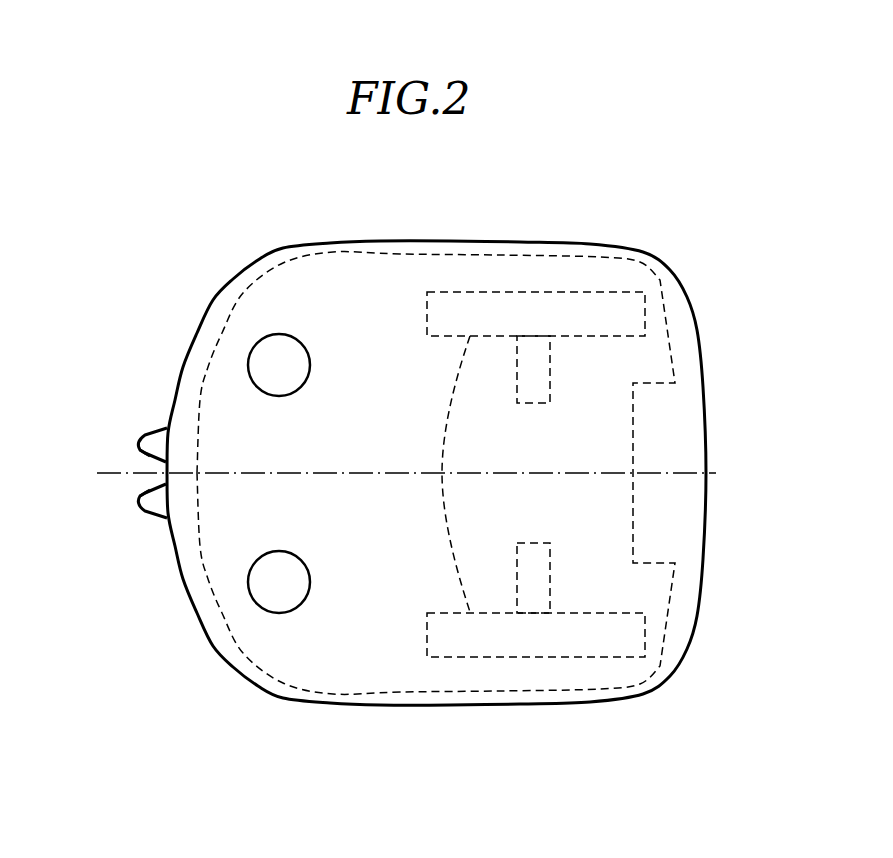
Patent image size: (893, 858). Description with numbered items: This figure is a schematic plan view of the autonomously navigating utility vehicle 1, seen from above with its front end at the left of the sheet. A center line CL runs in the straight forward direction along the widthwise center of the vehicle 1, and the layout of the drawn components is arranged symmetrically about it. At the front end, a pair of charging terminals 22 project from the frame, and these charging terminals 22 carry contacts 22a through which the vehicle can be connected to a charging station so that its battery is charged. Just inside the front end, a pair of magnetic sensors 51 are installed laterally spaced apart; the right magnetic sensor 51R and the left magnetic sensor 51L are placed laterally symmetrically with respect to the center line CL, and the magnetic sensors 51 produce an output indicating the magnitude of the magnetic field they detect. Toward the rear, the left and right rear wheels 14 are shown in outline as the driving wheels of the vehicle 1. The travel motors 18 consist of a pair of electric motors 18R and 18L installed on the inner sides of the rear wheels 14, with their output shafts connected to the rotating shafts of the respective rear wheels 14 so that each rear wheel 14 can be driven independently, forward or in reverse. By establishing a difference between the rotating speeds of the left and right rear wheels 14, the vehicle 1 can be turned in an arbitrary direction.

The autonomously navigating utility vehicle 1 is at (648, 241).
The rear wheels 14 is at (449, 474).
The travel motors 18 is at (536, 474).
The right travel motor 18R is at (532, 404).
The left travel motor 18L is at (535, 543).
The charging terminals 22 is at (140, 440).
The contacts 22a is at (146, 493).
The magnetic sensors 51 is at (265, 473).
The right magnetic sensor 51R is at (279, 397).
The left magnetic sensor 51L is at (279, 551).
The center line CL is at (420, 474).